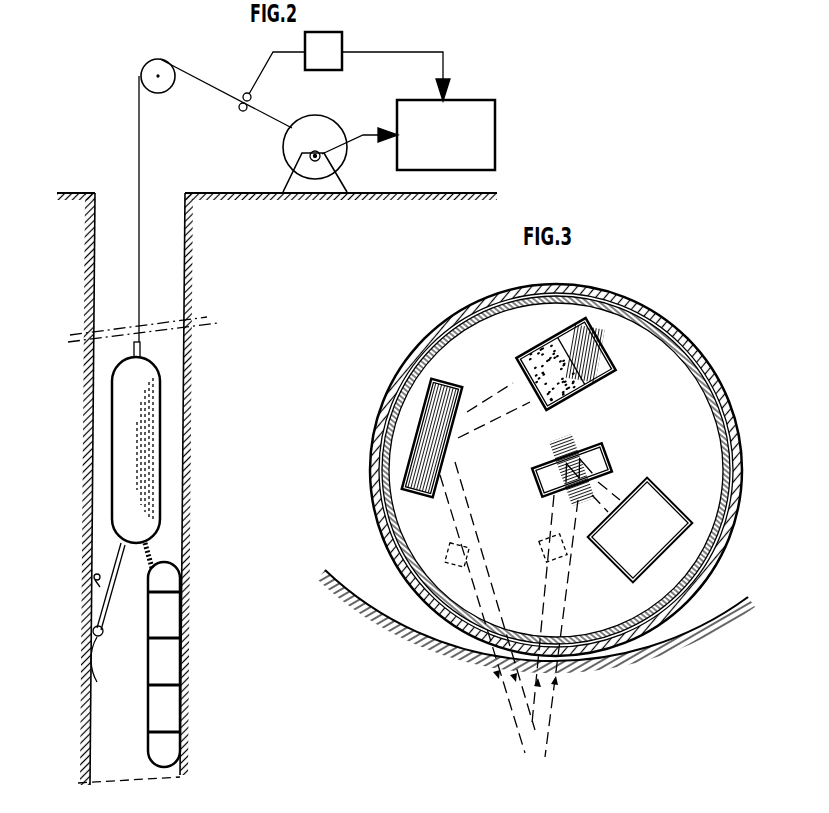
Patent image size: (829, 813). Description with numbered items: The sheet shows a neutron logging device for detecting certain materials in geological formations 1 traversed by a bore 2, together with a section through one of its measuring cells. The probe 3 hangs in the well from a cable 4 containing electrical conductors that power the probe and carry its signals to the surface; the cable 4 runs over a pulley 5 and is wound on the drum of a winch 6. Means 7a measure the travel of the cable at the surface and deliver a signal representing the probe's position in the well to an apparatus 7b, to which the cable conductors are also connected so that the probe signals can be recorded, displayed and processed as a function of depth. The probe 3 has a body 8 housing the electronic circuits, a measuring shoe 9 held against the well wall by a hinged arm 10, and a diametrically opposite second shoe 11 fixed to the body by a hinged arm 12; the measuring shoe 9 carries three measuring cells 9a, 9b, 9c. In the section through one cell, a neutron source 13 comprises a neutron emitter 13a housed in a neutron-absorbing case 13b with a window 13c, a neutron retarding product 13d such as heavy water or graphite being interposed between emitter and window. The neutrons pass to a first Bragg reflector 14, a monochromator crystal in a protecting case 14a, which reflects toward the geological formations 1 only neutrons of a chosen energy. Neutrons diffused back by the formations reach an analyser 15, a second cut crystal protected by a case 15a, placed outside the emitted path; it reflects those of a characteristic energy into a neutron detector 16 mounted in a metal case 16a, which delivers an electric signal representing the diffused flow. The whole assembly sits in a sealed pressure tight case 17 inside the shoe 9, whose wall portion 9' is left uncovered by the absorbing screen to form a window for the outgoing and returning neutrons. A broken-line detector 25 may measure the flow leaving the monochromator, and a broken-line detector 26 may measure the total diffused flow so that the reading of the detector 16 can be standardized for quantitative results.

In FIG. 2, the geological formations 1 is at (190, 352).
In FIG. 3, the geological formations 1 is at (742, 600).
In FIG. 2, the bore 2 is at (183, 227).
In FIG. 3, the bore 2 is at (407, 620).
In FIG. 2, the probe 3 is at (168, 465).
In FIG. 2, the cable 4 is at (139, 273).
In FIG. 2, the pulley 5 is at (155, 70).
In FIG. 2, the winch 6 is at (292, 150).
In FIG. 2, the cable travel measuring means 7a is at (342, 33).
In FIG. 2, the recording apparatus 7b is at (477, 100).
In FIG. 2, the probe body 8 is at (152, 392).
In FIG. 2, the measuring shoe 9 is at (185, 661).
In FIG. 3, the measuring shoe 9 is at (570, 470).
In FIG. 3, the window wall portion 9' is at (431, 654).
In FIG. 2, the measuring cell 9a is at (164, 615).
In FIG. 2, the measuring cell 9b is at (164, 661).
In FIG. 2, the measuring cell 9c is at (164, 708).
In FIG. 2, the hinged arm 10 is at (150, 550).
In FIG. 2, the second shoe 11 is at (94, 579).
In FIG. 2, the hinged arm 12 is at (113, 563).
In FIG. 3, the neutron source 13 is at (527, 333).
In FIG. 3, the neutron emitter 13a is at (590, 350).
In FIG. 3, the case 13b is at (600, 373).
In FIG. 3, the window 13c is at (537, 397).
In FIG. 3, the neutron retarding product 13d is at (540, 358).
In FIG. 3, the first Bragg reflector 14 is at (426, 497).
In FIG. 3, the protecting case 14a is at (437, 385).
In FIG. 3, the analyser 15 is at (585, 452).
In FIG. 3, the case 15a is at (605, 456).
In FIG. 3, the neutron detector 16 is at (653, 498).
In FIG. 3, the metal case 16a is at (678, 508).
In FIG. 3, the sealed pressure tight case 17 is at (721, 457).
In FIG. 3, the detector 25 is at (468, 560).
In FIG. 3, the detector 26 is at (542, 551).